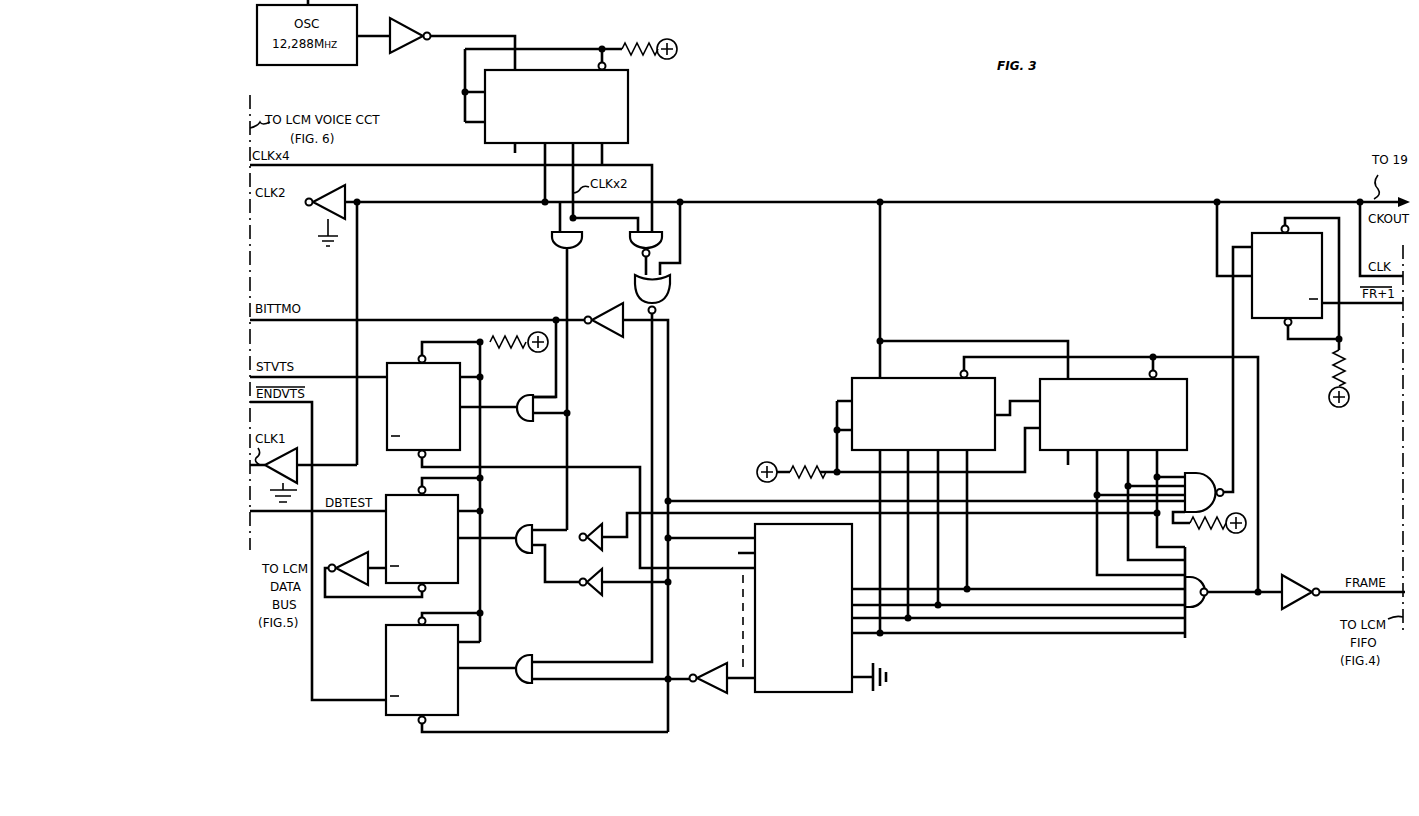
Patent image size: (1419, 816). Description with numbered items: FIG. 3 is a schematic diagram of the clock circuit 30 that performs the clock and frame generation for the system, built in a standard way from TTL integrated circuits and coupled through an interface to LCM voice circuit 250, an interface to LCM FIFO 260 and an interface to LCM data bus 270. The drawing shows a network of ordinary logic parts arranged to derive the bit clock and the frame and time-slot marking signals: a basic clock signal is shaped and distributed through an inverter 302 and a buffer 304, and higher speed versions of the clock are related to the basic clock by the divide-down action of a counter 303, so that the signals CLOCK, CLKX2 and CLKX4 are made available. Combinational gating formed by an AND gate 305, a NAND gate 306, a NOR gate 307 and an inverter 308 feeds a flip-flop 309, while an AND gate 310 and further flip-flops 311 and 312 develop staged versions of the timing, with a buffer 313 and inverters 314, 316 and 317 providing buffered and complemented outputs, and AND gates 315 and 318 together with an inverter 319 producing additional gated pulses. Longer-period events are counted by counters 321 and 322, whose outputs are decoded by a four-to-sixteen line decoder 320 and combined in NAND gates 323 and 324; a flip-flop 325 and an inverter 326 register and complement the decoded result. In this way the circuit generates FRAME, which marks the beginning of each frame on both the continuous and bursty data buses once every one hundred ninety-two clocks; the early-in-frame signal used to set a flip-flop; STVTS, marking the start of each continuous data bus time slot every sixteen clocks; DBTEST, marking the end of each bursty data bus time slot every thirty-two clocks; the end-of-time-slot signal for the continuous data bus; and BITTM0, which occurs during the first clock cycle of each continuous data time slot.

The inverter 302 is at (404, 10).
The counter 303 is at (628, 98).
The buffer 304 is at (343, 192).
The AND gate 305 is at (552, 241).
The NAND gate 306 is at (632, 241).
The NOR gate 307 is at (670, 293).
The inverter 308 is at (615, 337).
The flip-flop 309 is at (410, 363).
The AND gate 310 is at (522, 421).
The flip-flop 311 is at (458, 571).
The flip-flop 312 is at (386, 580).
The buffer 313 is at (298, 452).
The inverter 314 is at (352, 552).
The AND gate 315 is at (515, 532).
The inverter 316 is at (589, 530).
The inverter 317 is at (592, 595).
The AND gate 318 is at (518, 683).
The inverter 319 is at (704, 693).
The 4-16 line decoder 320 is at (830, 692).
The counter 321 is at (852, 382).
The counter 322 is at (1044, 453).
The NAND gate 323 is at (1190, 473).
The NAND gate 324 is at (1199, 608).
The flip-flop 325 is at (1254, 232).
The inverter 326 is at (1298, 586).
The interface to LCM voice circuit 250 is at (250, 293).
The interface to LCM FIFO 260 is at (1403, 470).
The interface to LCM data bus 270 is at (250, 530).
The clock circuit 30 is at (830, 366).